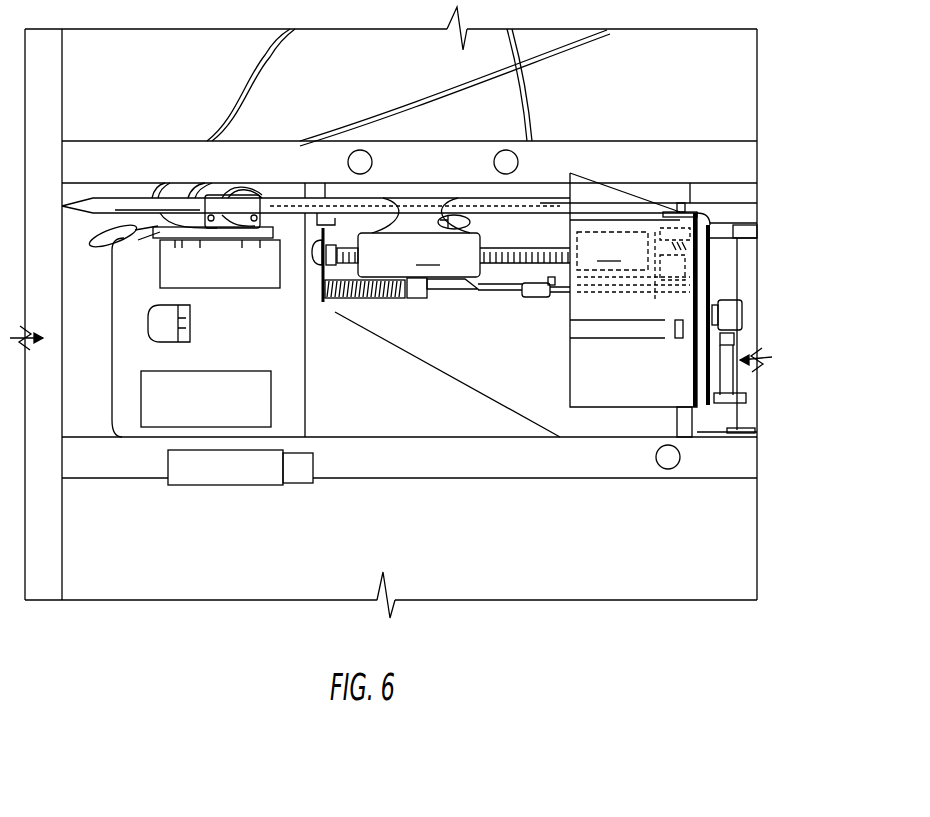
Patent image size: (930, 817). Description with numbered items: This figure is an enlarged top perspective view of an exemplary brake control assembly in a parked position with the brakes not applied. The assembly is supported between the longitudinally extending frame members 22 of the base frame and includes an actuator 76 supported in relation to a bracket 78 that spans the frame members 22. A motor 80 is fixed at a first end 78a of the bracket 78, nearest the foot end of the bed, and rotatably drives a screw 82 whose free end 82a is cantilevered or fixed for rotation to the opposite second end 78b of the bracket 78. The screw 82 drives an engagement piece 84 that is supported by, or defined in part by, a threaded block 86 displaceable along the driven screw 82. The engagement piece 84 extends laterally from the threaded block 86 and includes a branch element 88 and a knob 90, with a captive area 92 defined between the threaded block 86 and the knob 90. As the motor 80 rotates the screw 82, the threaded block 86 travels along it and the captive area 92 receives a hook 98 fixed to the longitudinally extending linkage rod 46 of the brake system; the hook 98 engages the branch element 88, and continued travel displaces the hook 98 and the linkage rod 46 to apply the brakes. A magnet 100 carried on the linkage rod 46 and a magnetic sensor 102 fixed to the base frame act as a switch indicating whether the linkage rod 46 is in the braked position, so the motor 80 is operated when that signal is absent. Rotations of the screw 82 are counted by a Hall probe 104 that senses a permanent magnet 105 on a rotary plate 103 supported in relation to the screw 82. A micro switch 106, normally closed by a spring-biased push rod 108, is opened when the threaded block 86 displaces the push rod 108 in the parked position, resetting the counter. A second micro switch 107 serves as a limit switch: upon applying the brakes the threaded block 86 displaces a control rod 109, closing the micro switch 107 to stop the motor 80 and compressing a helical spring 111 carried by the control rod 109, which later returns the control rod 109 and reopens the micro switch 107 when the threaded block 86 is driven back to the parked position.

The longitudinally extending frame member 22 is at (670, 153).
The linkage rod 46 is at (565, 211).
The actuator 76 is at (627, 78).
The bracket 78 is at (608, 425).
The first end of the bracket 78a is at (690, 427).
The second end of the bracket 78b is at (327, 305).
The motor 80 is at (633, 266).
The screw 82 is at (518, 260).
The free end of the screw 82a is at (338, 233).
The engagement piece 84 is at (428, 213).
The threaded block 86 is at (419, 255).
The branch element 88 is at (414, 212).
The knob 90 is at (452, 218).
The captive area 92 is at (443, 226).
The hook 98 is at (540, 209).
The magnet 100 is at (237, 205).
The magnetic sensor 102 is at (277, 233).
The rotary plate 103 is at (662, 228).
The Hall probe 104 is at (680, 238).
The permanent magnet 105 is at (668, 218).
The micro switch 106 is at (677, 263).
The micro switch 107 is at (673, 310).
The push rod 108 is at (553, 284).
The control rod 109 is at (460, 300).
The helical spring 111 is at (368, 300).